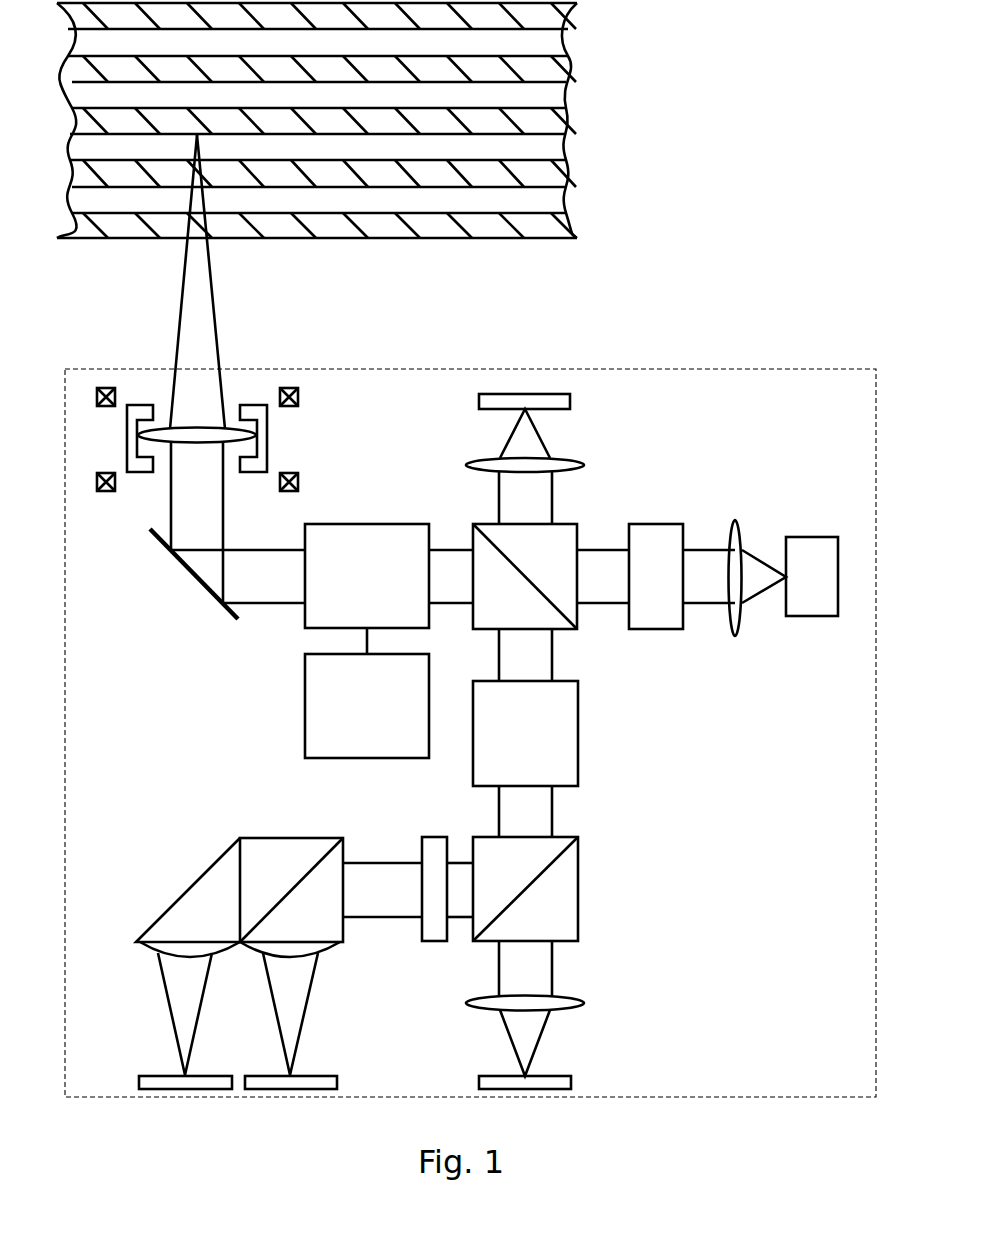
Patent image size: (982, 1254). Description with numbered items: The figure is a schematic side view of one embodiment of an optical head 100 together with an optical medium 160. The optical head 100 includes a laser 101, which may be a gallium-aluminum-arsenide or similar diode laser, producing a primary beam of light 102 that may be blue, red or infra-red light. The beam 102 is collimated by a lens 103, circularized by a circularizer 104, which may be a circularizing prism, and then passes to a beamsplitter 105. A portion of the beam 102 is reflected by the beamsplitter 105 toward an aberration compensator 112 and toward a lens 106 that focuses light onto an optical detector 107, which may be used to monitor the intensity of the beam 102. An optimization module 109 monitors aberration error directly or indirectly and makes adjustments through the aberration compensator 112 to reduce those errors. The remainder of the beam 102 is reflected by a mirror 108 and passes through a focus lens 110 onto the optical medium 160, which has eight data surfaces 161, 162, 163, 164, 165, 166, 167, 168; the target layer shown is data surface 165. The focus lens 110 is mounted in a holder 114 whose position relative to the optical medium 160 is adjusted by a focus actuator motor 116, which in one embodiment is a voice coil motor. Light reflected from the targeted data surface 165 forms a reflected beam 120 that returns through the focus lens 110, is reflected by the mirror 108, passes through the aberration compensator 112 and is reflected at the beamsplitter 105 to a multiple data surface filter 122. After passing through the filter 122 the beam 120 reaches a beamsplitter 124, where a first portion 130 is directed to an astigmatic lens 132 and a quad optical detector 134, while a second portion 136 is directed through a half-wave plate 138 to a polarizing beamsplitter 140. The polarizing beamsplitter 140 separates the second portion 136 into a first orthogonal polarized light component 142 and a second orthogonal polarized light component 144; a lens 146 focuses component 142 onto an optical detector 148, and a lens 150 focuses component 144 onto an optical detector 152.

The optical head 100 is at (727, 369).
The laser 101 is at (808, 537).
The primary beam of light 102 is at (760, 561).
The lens 103 is at (735, 520).
The circularizer 104 is at (655, 524).
The beamsplitter 105 is at (577, 524).
The lens 106 is at (585, 465).
The optical detector 107 is at (523, 394).
The mirror 108 is at (195, 580).
The optimization module 109 is at (367, 693).
The focus lens 110 is at (232, 428).
The aberration compensator 112 is at (389, 576).
The holder 114 is at (258, 405).
The focus actuator motor 116 is at (293, 388).
The reflected beam 120 is at (552, 652).
The multiple data surface filter 122 is at (578, 725).
The beamsplitter 124 is at (578, 880).
The first portion of beam 130 is at (552, 960).
The astigmatic lens 132 is at (583, 1003).
The quad optical detector 134 is at (571, 1082).
The second portion of beam 136 is at (457, 863).
The half-wave plate 138 is at (432, 837).
The polarizing beamsplitter 140 is at (288, 838).
The first orthogonal polarized light component 142 is at (307, 1033).
The second orthogonal polarized light component 144 is at (170, 1012).
The lens 146 is at (337, 946).
The optical detector 148 is at (337, 1078).
The lens 150 is at (140, 947).
The optical detector 152 is at (140, 1076).
The optical medium 160 is at (563, 253).
The data surface 161 is at (566, 31).
The data surface 162 is at (562, 57).
The data surface 163 is at (566, 83).
The data surface 164 is at (562, 109).
The data surface 165 is at (566, 135).
The data surface 166 is at (562, 161).
The data surface 167 is at (566, 188).
The data surface 168 is at (562, 214).